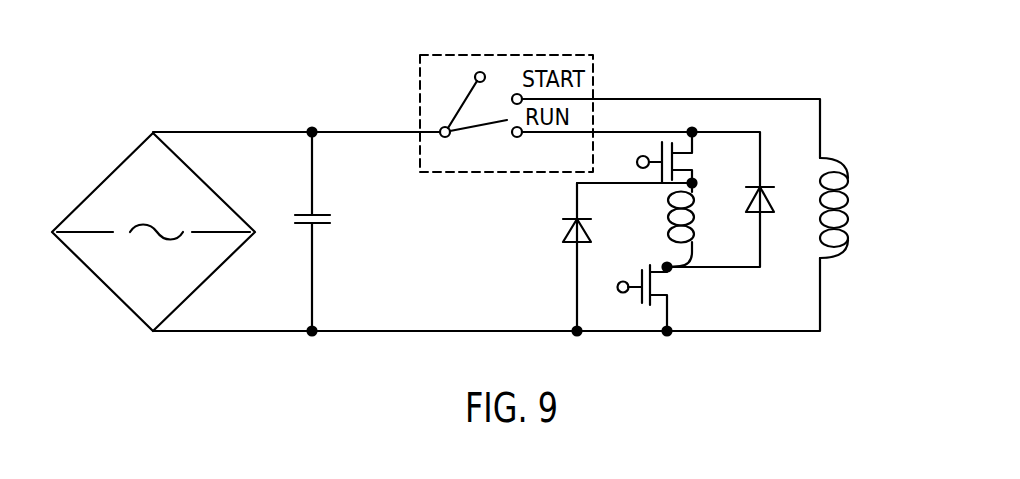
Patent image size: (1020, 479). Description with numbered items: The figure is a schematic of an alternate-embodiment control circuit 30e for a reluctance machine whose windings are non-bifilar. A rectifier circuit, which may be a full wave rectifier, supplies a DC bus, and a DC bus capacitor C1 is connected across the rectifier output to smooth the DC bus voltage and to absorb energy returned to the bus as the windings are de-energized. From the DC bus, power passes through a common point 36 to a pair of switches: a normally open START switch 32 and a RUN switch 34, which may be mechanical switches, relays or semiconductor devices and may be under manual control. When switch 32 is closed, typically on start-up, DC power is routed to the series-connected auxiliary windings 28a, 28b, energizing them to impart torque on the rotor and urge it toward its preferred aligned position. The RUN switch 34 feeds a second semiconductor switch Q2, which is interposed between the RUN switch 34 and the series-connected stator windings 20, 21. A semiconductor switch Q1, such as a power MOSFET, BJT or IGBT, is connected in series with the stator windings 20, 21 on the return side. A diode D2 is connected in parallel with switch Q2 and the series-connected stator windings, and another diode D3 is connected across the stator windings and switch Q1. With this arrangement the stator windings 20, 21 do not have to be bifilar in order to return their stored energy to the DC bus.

The control circuit 30e is at (93, 172).
The common point 36 is at (311, 129).
The DC bus capacitor C1 is at (307, 230).
The switch 32 is at (472, 90).
The RUN switch 34 is at (488, 127).
The second semiconductor switch Q2 is at (658, 152).
The semiconductor switch Q1 is at (640, 297).
The stator winding 20 is at (647, 227).
The stator winding 21 is at (668, 233).
The diode D2 is at (750, 220).
The diode D3 is at (567, 247).
The auxiliary winding 28a is at (882, 231).
The auxiliary winding 28b is at (833, 258).